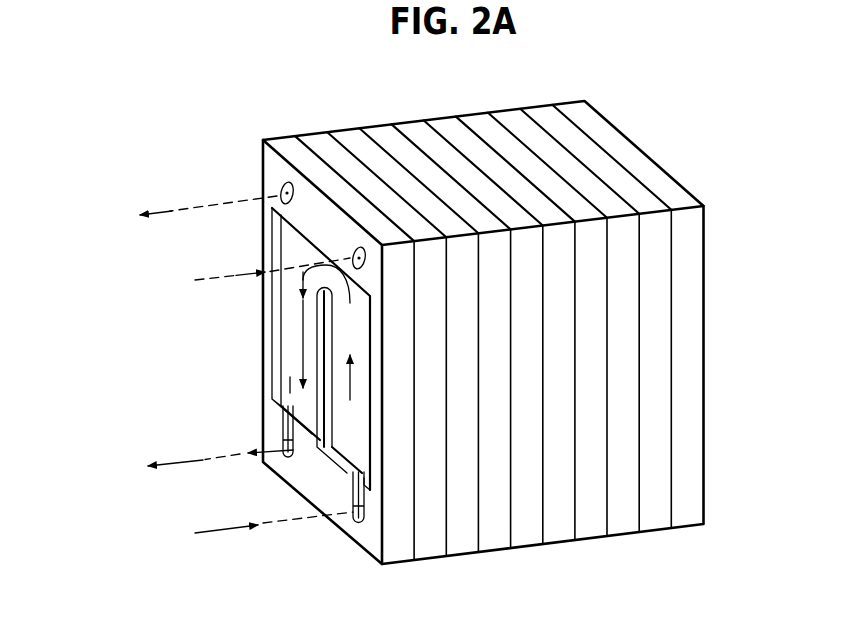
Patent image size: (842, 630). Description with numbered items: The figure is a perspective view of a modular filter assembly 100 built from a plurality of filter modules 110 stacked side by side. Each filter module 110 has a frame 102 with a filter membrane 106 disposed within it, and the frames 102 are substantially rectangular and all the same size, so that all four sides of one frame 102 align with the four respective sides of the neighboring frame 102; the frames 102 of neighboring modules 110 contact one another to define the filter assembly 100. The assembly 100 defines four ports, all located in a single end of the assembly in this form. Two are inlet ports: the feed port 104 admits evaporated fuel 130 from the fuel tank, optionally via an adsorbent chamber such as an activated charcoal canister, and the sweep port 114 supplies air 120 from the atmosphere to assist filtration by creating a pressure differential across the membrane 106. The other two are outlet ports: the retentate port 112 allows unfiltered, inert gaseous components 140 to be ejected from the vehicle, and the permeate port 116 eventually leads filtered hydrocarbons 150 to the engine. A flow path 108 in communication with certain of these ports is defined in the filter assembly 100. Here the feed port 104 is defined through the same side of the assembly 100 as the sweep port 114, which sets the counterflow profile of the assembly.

The filter assembly 100 is at (218, 105).
The frame 102 is at (378, 556).
The feed port 104 is at (357, 512).
The filter membrane 106 is at (365, 388).
The flow path 108 is at (350, 308).
The filter module 110 is at (326, 142).
The retentate port 112 is at (283, 428).
The sweep port 114 is at (356, 253).
The permeate port 116 is at (280, 191).
The air 120 is at (195, 280).
The evaporated fuel 130 is at (215, 532).
The inert gaseous components 140 is at (185, 458).
The filtered hydrocarbons 150 is at (185, 208).